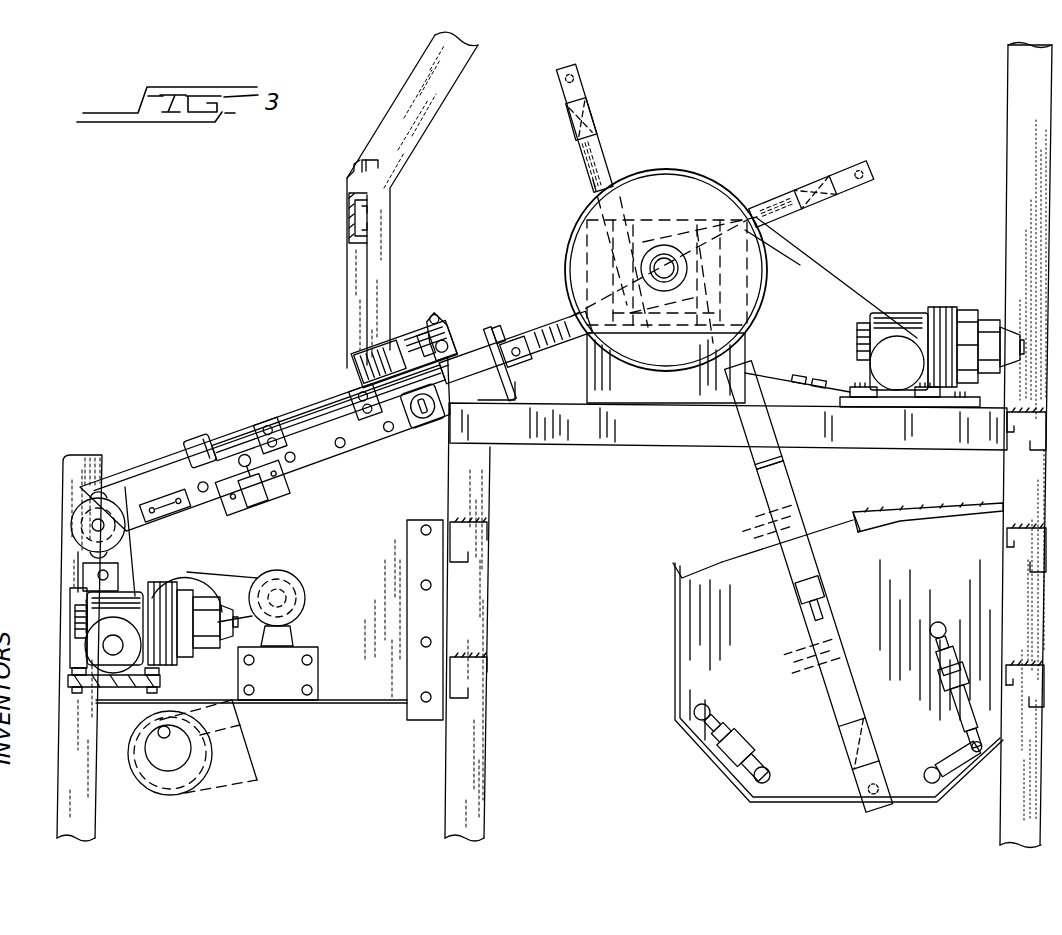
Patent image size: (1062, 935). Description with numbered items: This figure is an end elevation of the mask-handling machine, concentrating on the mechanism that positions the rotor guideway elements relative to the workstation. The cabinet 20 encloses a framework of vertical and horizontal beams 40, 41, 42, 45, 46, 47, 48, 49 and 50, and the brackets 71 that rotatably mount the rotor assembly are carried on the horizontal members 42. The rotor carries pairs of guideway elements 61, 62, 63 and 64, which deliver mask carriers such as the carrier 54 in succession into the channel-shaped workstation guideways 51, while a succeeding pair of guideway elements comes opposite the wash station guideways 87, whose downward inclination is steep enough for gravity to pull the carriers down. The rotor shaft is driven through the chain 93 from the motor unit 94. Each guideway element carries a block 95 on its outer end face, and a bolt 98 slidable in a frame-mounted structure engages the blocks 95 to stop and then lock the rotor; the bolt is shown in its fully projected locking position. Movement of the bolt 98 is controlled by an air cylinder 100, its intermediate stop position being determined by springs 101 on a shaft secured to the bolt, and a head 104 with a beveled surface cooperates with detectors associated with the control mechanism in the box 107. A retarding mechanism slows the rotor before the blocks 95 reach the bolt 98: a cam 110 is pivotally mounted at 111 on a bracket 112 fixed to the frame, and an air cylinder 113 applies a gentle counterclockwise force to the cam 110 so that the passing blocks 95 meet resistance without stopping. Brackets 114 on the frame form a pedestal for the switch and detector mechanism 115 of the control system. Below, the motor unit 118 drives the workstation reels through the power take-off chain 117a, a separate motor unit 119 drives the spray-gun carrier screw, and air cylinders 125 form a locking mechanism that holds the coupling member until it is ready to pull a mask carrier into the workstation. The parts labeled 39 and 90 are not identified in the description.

The cabinet 20 is at (340, 205).
The discharge pipe 39 is at (150, 762).
The framework beam 40 is at (66, 796).
The framework beam 41 is at (470, 726).
The horizontal member 42 is at (648, 430).
The framework beam 45 is at (1020, 446).
The framework beam 46 is at (1006, 560).
The framework beam 47 is at (490, 540).
The framework beam 48 is at (487, 668).
The framework beam 49 is at (386, 168).
The framework beam 50 is at (370, 240).
The workstation guideway 51 is at (783, 192).
The mask carrier 54 is at (588, 158).
The guideway element 61 is at (760, 457).
The guideway element 62 is at (521, 338).
The guideway element 63 is at (597, 103).
The guideway element 64 is at (821, 178).
The bracket 71 is at (745, 352).
The wash station guideway 87 is at (786, 513).
The hopper 90 is at (674, 633).
The chain 93 is at (1013, 812).
The motor unit 94 is at (903, 318).
The block 95 is at (478, 346).
The bolt 98 is at (487, 380).
The air cylinder 100 is at (340, 412).
The spring 101 is at (240, 445).
The head 104 is at (198, 460).
The control box 107 is at (255, 498).
The cam 110 is at (448, 320).
The pivot 111 is at (437, 312).
The bracket 112 is at (425, 338).
The air cylinder 113 is at (372, 362).
The bracket 114 is at (500, 394).
The switch and detector mechanism 115 is at (498, 330).
The chain 117a is at (130, 562).
The motor unit 118 is at (205, 647).
The motor unit 119 is at (306, 604).
The air cylinder 125 is at (438, 428).